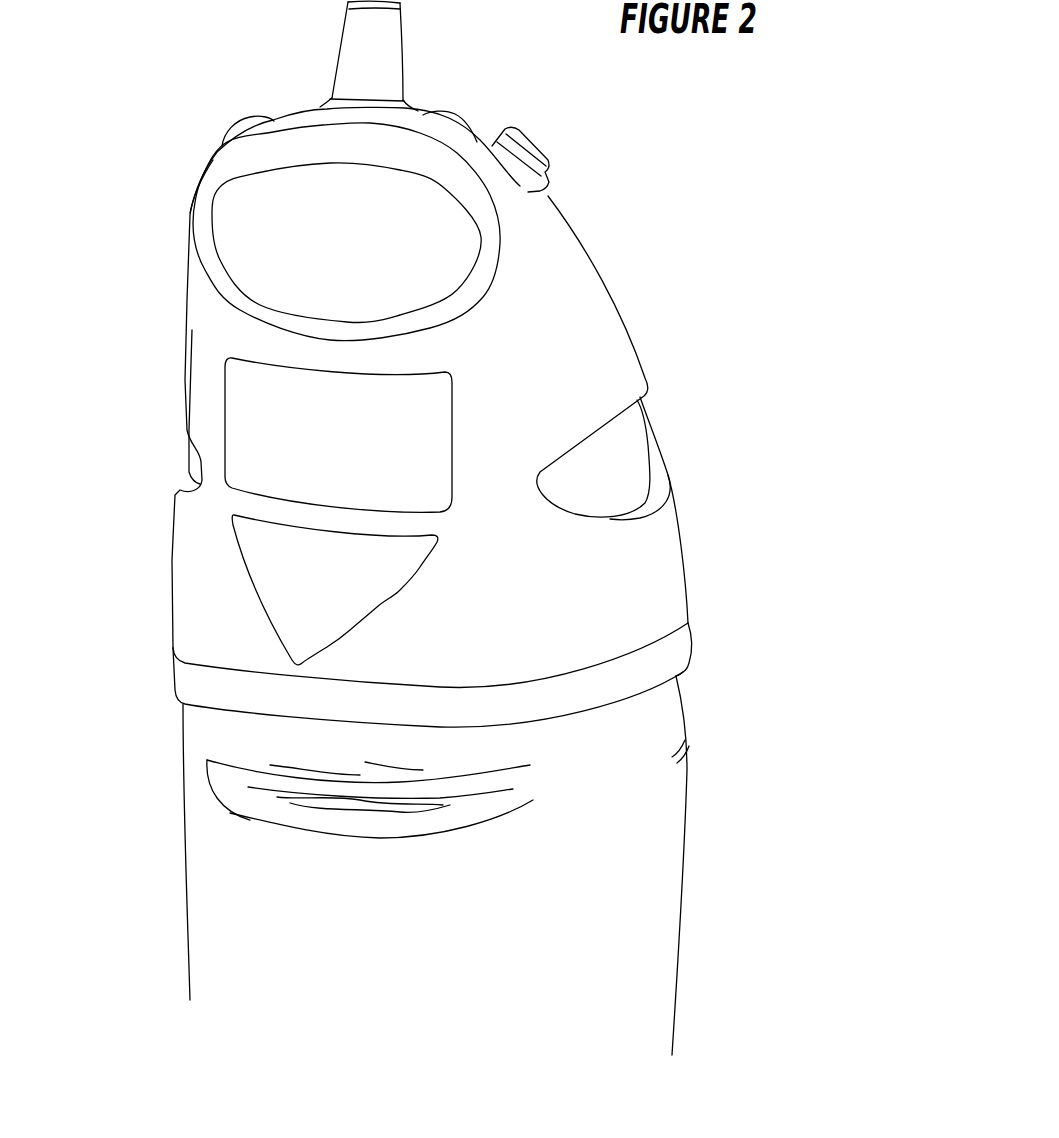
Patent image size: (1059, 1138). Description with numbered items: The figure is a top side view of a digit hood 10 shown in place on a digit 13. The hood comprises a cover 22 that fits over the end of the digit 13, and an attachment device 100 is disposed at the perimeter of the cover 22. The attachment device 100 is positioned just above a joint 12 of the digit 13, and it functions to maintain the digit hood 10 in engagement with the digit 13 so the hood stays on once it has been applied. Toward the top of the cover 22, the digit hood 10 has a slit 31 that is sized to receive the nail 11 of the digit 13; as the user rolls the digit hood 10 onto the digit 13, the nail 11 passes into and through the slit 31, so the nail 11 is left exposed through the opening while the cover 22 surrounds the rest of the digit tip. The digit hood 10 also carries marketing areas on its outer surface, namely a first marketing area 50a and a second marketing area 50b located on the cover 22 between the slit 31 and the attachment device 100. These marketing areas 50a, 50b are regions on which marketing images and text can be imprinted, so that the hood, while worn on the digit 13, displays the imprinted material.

The digit hood 10 is at (124, 101).
The nail 11 is at (300, 135).
The joint 12 is at (247, 820).
The digit 13 is at (655, 908).
The cover 22 is at (588, 303).
The slit 31 is at (202, 232).
The first marketing area 50a is at (245, 384).
The second marketing area 50b is at (257, 565).
The attachment device 100 is at (223, 700).